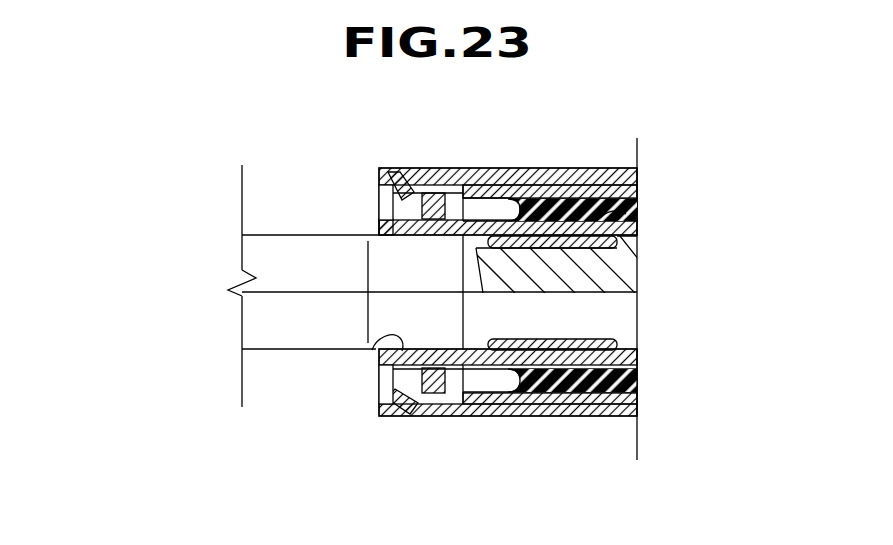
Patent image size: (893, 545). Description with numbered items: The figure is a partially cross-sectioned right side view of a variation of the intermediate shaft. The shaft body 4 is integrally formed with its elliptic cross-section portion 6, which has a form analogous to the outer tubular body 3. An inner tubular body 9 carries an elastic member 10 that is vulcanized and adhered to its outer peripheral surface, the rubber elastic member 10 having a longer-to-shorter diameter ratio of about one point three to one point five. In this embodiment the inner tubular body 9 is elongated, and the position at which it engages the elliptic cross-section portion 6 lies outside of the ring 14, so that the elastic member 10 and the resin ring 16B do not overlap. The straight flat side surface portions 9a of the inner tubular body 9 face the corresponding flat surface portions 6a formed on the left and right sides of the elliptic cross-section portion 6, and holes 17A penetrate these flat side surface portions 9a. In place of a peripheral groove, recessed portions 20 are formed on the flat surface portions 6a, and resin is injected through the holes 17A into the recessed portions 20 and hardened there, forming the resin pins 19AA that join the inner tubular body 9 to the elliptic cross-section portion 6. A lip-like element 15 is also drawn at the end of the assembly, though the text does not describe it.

The outer tubular body 3 is at (568, 183).
The shaft body 4 is at (325, 328).
The elliptic cross-section portion 6 is at (625, 344).
The flat surface portions 6a is at (620, 374).
The inner tubular body 9 is at (377, 226).
The straight flat side surface portions 9a is at (400, 239).
The elastic member 10 is at (625, 215).
The ring 14 is at (432, 193).
The lip 15 is at (395, 178).
The resin ring 16B is at (637, 280).
The holes 17A is at (622, 197).
The resin pins 19AA is at (595, 171).
The recessed portions 20 is at (605, 268).